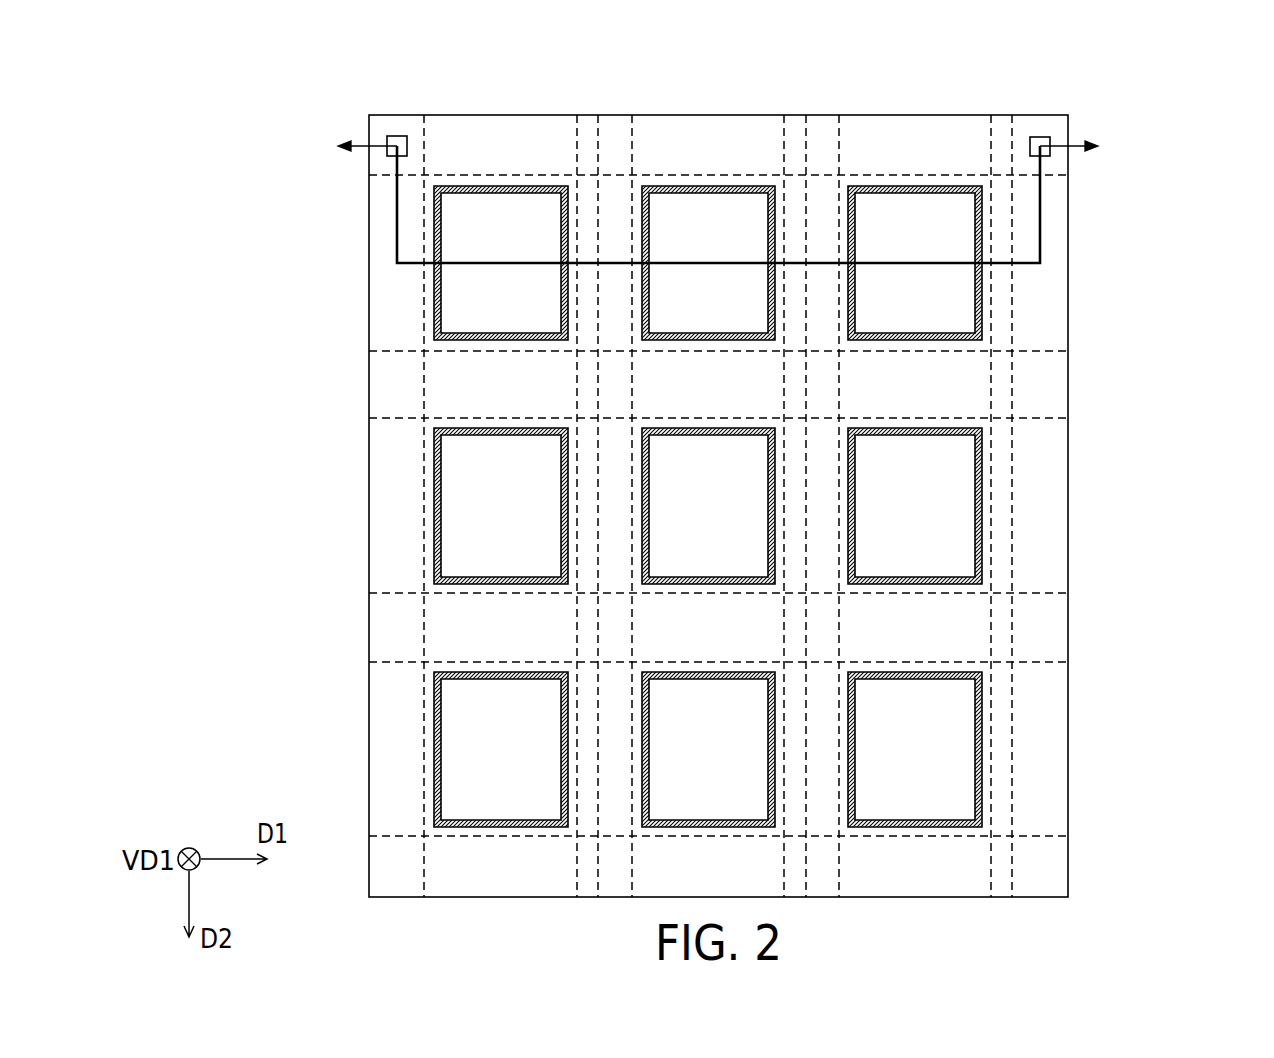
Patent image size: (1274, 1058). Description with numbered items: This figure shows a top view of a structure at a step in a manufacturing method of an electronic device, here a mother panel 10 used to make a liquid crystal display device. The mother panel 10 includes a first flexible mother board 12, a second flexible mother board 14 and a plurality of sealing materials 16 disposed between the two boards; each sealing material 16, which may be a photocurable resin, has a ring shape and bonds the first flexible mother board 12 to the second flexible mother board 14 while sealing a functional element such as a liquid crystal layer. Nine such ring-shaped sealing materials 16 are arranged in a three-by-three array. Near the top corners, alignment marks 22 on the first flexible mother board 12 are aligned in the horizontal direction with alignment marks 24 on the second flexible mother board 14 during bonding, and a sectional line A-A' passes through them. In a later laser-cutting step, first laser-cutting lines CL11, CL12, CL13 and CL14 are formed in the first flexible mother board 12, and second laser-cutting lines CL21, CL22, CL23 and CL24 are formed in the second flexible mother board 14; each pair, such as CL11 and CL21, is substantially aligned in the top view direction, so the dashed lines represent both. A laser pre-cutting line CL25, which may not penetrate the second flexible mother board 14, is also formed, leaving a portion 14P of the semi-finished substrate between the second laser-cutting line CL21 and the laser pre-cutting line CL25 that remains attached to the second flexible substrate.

The mother panel 10 is at (1095, 100).
The first flexible mother board 12 is at (773, 506).
The second flexible mother board 14 is at (1068, 268).
The portion of the semi-finished substrate 14P is at (599, 481).
The sealing material 16 is at (497, 186).
The alignment mark 22 is at (728, 111).
The alignment mark 24 is at (399, 140).
The first laser-cutting line CL11 is at (599, 506).
The second laser-cutting line CL21 is at (595, 289).
The first laser-cutting line CL12 is at (513, 506).
The second laser-cutting line CL22 is at (424, 386).
The first laser-cutting line CL13 is at (809, 418).
The second laser-cutting line CL23 is at (1049, 177).
The first laser-cutting line CL14 is at (810, 571).
The second laser-cutting line CL24 is at (1049, 351).
The laser pre-cutting line CL25 is at (578, 315).